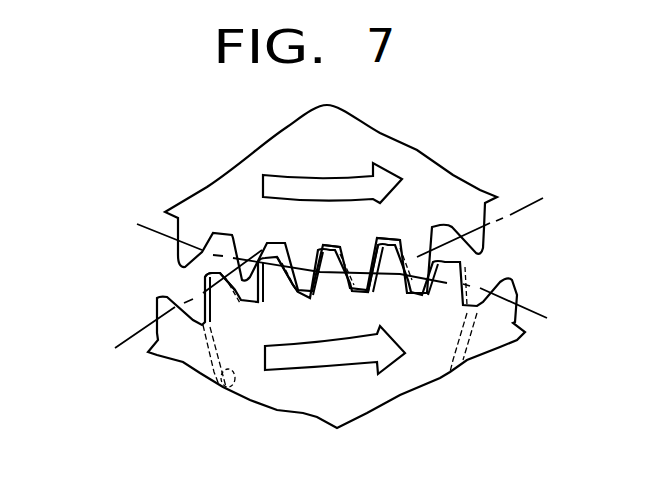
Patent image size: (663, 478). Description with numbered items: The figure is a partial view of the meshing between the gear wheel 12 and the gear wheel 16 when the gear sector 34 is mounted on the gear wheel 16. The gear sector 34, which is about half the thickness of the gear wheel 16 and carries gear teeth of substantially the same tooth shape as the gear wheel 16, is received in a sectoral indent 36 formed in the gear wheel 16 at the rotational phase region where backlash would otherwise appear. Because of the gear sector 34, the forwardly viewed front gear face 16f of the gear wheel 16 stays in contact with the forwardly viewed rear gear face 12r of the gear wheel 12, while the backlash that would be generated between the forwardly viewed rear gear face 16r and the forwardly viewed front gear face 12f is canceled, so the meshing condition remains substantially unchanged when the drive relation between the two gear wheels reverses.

The gear wheel 12 is at (212, 188).
The gear wheel 16 is at (185, 362).
The forwardly viewed rear gear face 12r is at (323, 244).
The forwardly viewed front gear face 12f is at (379, 239).
The forwardly viewed rear gear face 16r is at (303, 293).
The forwardly viewed front gear face 16f is at (374, 294).
The gear sector 34 is at (205, 290).
The sectoral indent 36 is at (233, 393).